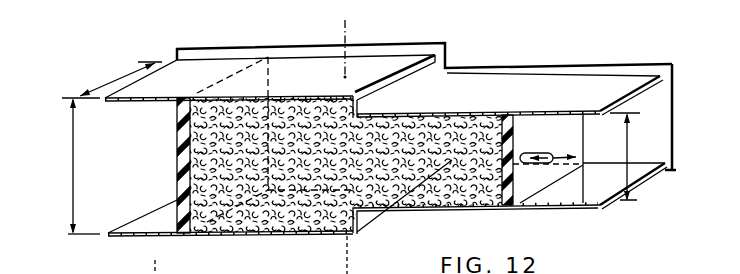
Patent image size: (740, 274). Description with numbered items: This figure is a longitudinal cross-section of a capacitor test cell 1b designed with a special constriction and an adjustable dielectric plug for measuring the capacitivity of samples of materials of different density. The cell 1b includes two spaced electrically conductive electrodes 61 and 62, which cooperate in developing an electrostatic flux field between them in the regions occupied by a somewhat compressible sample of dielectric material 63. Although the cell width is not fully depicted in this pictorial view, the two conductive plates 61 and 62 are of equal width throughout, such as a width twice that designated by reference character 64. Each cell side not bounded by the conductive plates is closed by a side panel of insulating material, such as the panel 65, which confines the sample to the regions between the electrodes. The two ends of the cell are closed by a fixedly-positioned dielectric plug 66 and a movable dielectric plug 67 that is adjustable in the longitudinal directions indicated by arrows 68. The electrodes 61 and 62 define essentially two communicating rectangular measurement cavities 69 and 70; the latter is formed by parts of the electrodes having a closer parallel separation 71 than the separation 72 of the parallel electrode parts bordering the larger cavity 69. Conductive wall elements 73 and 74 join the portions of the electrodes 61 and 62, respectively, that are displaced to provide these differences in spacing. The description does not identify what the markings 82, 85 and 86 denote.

The cell 1b is at (140, 50).
The electrically conductive electrode 61 is at (177, 70).
The electrically conductive electrode 62 is at (157, 217).
The sample of dielectric material 63 is at (362, 222).
The width designation 64 is at (113, 78).
The side panel of insulating material 65 is at (404, 47).
The fixedly-positioned dielectric plug 66 is at (174, 156).
The movable dielectric plug 67 is at (530, 128).
The arrows 68 is at (560, 144).
The larger measurement cavity 69 is at (302, 134).
The measurement cavity 70 is at (457, 152).
The closer parallel separation 71 is at (630, 150).
The separation 72 is at (73, 160).
The conductive wall element 73 is at (420, 75).
The conductive wall element 74 is at (354, 216).
The dimension 82 is at (176, 268).
The dimension 85 is at (160, 273).
The dimension 86 is at (250, 270).